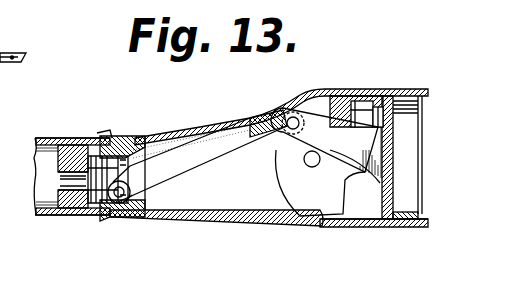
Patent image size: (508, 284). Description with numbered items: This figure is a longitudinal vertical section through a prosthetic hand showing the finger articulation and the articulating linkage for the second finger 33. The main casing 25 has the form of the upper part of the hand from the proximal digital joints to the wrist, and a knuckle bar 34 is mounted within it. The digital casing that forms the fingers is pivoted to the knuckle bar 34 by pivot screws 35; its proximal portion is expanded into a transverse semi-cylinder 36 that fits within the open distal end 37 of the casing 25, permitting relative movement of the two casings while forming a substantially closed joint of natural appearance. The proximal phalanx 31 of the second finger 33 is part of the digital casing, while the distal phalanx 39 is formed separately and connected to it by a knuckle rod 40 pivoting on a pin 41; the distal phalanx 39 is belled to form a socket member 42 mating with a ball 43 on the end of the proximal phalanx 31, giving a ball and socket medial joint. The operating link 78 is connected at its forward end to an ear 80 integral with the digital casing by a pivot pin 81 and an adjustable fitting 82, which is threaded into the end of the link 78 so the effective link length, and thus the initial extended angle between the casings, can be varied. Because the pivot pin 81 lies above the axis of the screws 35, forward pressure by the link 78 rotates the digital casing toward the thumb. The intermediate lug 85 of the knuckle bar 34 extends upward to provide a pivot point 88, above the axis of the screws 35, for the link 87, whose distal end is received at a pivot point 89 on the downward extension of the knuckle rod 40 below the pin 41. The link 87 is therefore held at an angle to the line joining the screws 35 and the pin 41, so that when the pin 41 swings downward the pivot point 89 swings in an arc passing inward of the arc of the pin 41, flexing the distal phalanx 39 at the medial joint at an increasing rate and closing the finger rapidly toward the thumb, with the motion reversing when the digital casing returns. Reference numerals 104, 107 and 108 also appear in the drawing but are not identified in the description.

The casing 25 is at (368, 225).
The proximal phalanx 31 is at (252, 211).
The second finger 33 is at (192, 204).
The knuckle bar 34 is at (402, 218).
The pivot screws 35 is at (304, 162).
The transverse semi-cylinder 36 is at (297, 93).
The open distal end 37 is at (337, 94).
The distal phalanx 39 is at (50, 137).
The knuckle rods 40 is at (70, 168).
The pins 41 is at (147, 148).
The socket members 42 is at (100, 136).
The balls 43 is at (118, 141).
The link 78 is at (394, 106).
The ear 80 is at (343, 103).
The pivot pin 81 is at (338, 118).
The adjustable fitting 82 is at (364, 106).
The intermediate lug 85 is at (348, 180).
The link 87 is at (218, 146).
The pivot point 88 is at (284, 115).
The pivot points 89 is at (125, 201).
The bore 104 is at (33, 145).
The wall 107 is at (34, 213).
The wall 108 is at (33, 206).